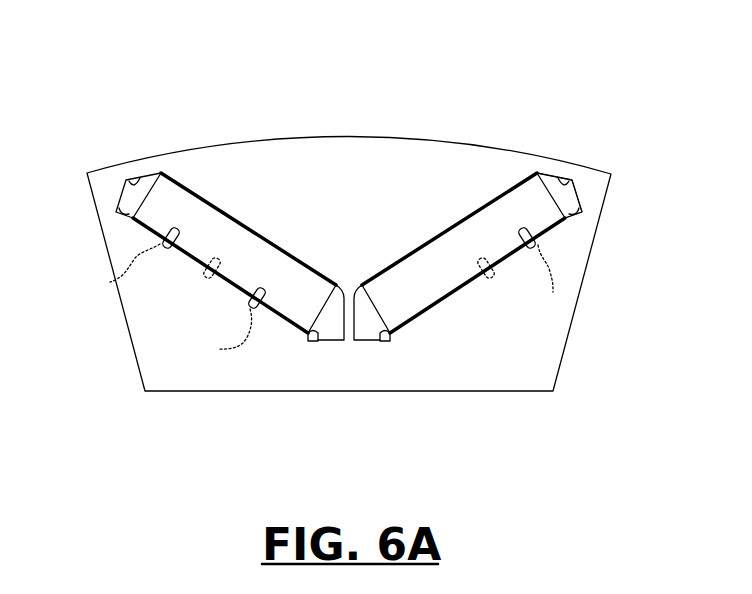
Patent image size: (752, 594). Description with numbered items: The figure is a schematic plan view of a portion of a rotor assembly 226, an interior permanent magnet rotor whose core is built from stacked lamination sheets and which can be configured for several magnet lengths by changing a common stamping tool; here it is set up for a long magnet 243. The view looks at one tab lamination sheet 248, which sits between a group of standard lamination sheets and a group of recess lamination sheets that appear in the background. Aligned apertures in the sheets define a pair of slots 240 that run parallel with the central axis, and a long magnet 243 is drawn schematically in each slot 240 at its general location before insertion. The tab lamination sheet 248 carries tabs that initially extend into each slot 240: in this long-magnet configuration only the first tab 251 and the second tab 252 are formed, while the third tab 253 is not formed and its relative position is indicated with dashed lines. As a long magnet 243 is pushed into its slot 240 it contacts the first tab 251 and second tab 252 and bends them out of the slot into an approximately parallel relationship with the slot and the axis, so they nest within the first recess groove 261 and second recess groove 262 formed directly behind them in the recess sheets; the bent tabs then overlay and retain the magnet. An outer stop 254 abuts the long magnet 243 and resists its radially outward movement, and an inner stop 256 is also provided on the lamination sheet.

The rotor assembly 226 is at (356, 204).
The slot 240 is at (125, 181).
The long magnet 243 is at (172, 192).
The tab lamination sheet 248 is at (288, 137).
The first tab 251 is at (183, 235).
The second tab 252 is at (268, 293).
The third tab 253 is at (225, 261).
The outer stop 254 is at (574, 200).
The inner stop 256 is at (312, 343).
The first recess groove 261 is at (319, 283).
The second recess groove 262 is at (215, 336).